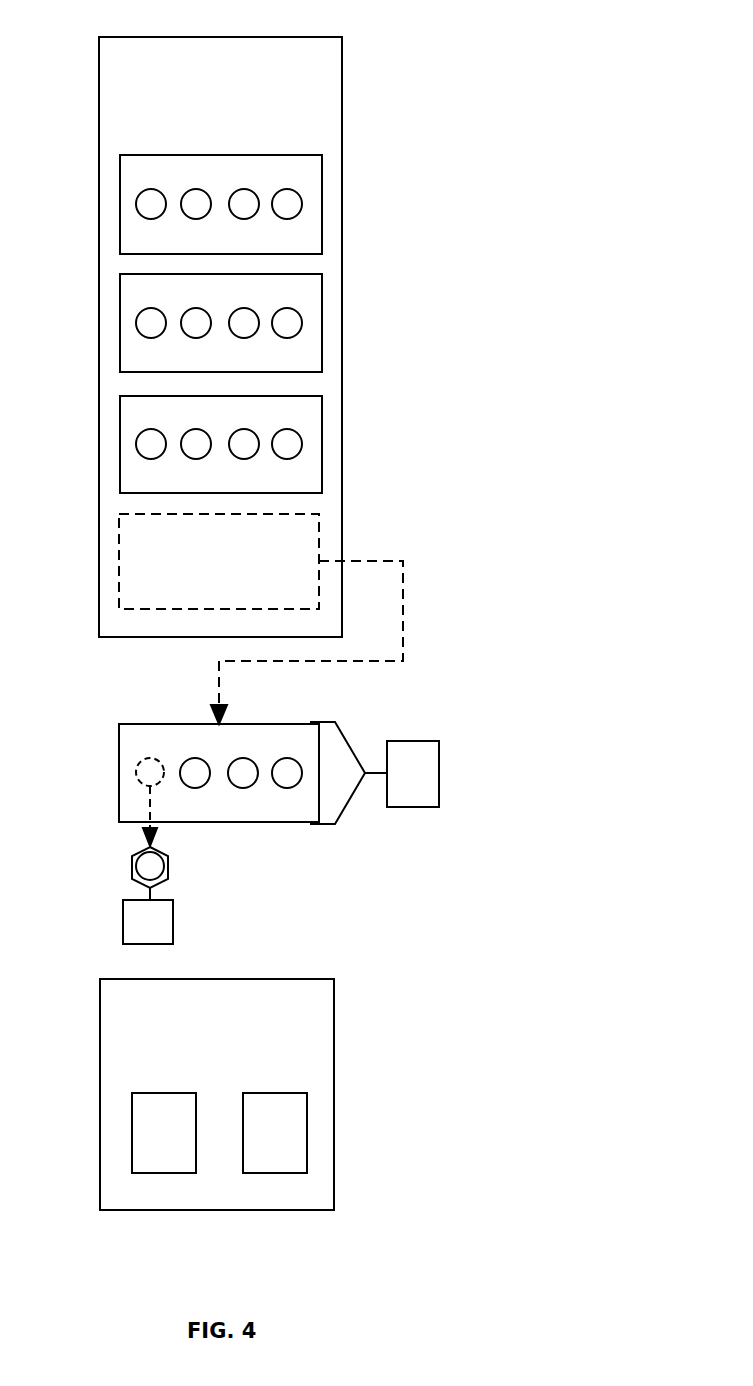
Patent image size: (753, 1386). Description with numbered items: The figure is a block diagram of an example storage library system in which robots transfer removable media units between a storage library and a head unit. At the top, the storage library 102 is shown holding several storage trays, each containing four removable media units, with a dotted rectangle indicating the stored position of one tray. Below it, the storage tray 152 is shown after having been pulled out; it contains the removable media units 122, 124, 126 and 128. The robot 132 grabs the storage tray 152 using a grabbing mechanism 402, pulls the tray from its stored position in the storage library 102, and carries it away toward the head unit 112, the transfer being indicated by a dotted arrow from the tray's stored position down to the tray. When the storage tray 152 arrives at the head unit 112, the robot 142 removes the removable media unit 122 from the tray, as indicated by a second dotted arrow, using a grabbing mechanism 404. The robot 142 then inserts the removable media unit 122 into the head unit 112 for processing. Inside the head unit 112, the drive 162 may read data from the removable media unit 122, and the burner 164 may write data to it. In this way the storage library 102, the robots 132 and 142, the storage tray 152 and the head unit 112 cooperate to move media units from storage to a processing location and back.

The storage library 102 is at (342, 118).
The head unit 112 is at (334, 1045).
The removable media unit 122 is at (140, 853).
The removable media unit 124 is at (197, 788).
The removable media unit 126 is at (245, 788).
The removable media unit 128 is at (289, 788).
The robot 132 is at (412, 741).
The robot 142 is at (173, 920).
The storage tray 152 is at (147, 724).
The drive 162 is at (162, 1173).
The burner 164 is at (272, 1173).
The grabbing mechanism 402 is at (357, 792).
The grabbing mechanism 404 is at (133, 870).